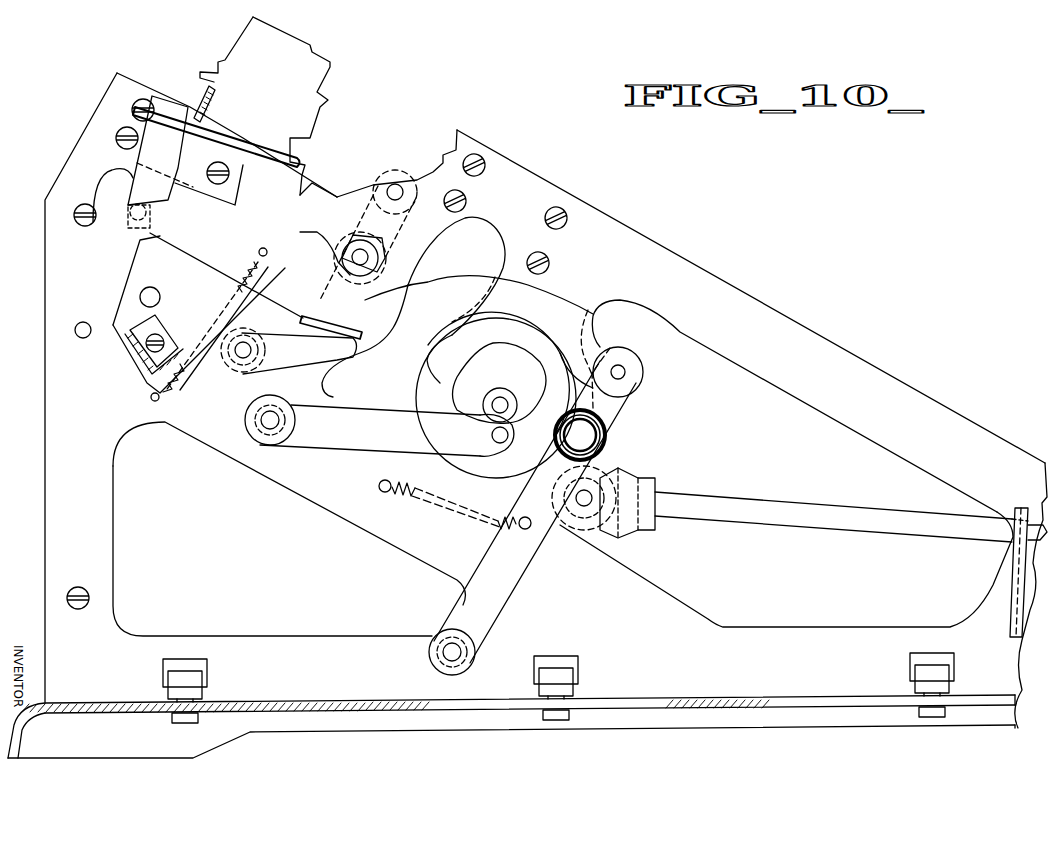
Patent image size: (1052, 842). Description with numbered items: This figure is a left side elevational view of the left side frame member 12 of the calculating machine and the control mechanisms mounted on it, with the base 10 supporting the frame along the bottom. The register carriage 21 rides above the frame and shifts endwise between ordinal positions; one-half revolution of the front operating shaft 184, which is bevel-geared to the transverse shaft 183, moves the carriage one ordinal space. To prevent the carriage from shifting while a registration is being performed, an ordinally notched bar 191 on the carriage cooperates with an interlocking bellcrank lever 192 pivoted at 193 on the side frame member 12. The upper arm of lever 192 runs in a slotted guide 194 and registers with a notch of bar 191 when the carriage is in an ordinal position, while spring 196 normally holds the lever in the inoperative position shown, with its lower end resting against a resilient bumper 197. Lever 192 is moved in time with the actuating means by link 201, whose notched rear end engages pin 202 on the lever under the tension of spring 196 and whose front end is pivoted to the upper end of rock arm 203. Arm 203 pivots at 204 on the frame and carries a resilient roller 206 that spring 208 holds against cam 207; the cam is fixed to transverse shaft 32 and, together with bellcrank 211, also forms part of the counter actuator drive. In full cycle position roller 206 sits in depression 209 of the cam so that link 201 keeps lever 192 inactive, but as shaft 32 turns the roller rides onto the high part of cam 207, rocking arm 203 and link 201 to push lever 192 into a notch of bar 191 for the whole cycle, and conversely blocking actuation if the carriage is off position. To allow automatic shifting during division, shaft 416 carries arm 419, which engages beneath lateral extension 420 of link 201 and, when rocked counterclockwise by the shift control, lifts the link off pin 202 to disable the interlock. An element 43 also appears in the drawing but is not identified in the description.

The base 10 is at (672, 697).
The side frame member 12 is at (45, 390).
The carriage 21 is at (336, 103).
The transverse shaft 32 is at (500, 397).
The hole 43 is at (153, 290).
The transverse shaft 183 is at (575, 532).
The shaft 184 is at (805, 520).
The ordinally notched bar 191 is at (205, 90).
The interlocking bellcrank lever 192 is at (137, 160).
The pivot 193 is at (85, 324).
The slotted guide 194 is at (216, 143).
The spring 196 is at (175, 386).
The resilient bumper 197 is at (160, 320).
The link 201 is at (305, 233).
The pin 202 is at (127, 224).
The rock arm 203 is at (515, 583).
The pivot 204 is at (440, 652).
The roller 206 is at (608, 435).
The cam 207 is at (460, 452).
The spring 208 is at (400, 495).
The depression 209 is at (535, 450).
The bellcrank 211 is at (316, 446).
The shaft 416 is at (244, 340).
The arm 419 is at (284, 360).
The lateral extension 420 is at (338, 320).